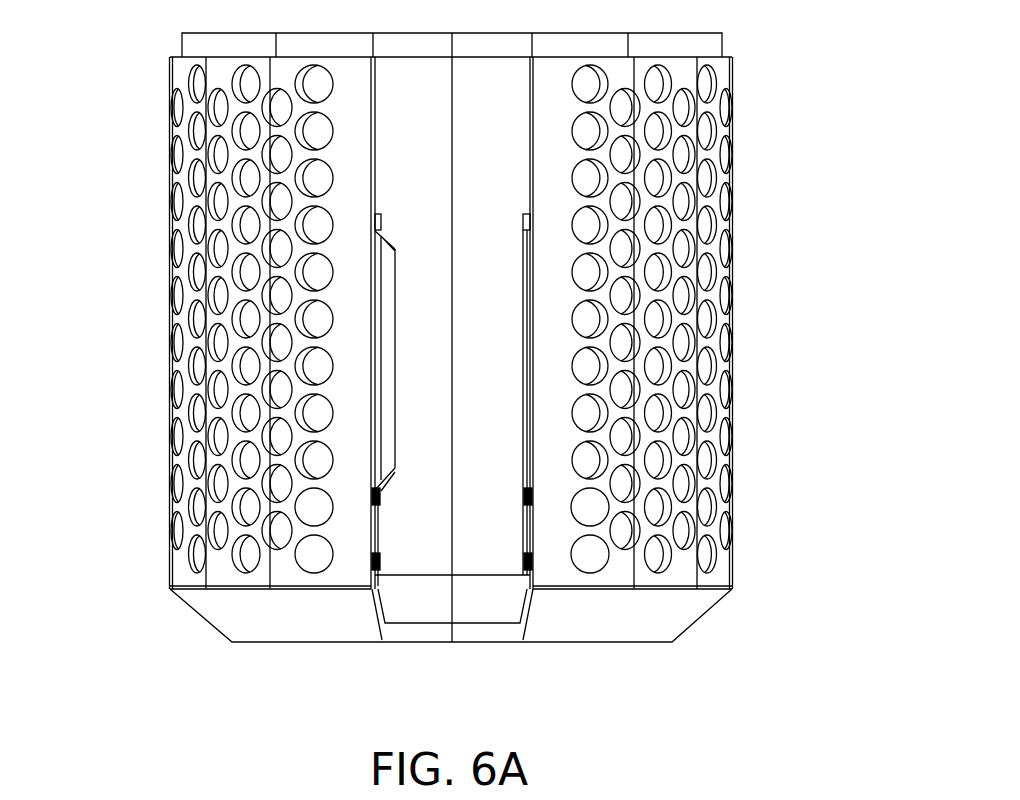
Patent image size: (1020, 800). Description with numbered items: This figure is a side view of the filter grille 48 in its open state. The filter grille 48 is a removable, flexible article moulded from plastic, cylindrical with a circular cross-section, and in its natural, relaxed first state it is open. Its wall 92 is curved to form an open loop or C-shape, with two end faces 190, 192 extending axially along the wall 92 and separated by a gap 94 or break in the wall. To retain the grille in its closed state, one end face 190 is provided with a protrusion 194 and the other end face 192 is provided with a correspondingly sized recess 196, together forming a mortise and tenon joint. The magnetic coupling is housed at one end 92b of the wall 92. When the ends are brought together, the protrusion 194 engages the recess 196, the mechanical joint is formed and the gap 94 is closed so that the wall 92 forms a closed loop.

The filter grille 48 is at (121, 73).
The end face 190 is at (373, 76).
The end face 192 is at (531, 111).
The protrusion 194 is at (390, 456).
The recess 196 is at (527, 371).
The wall 92 is at (183, 578).
The end of the wall 92b is at (723, 579).
The gap 94 is at (520, 650).